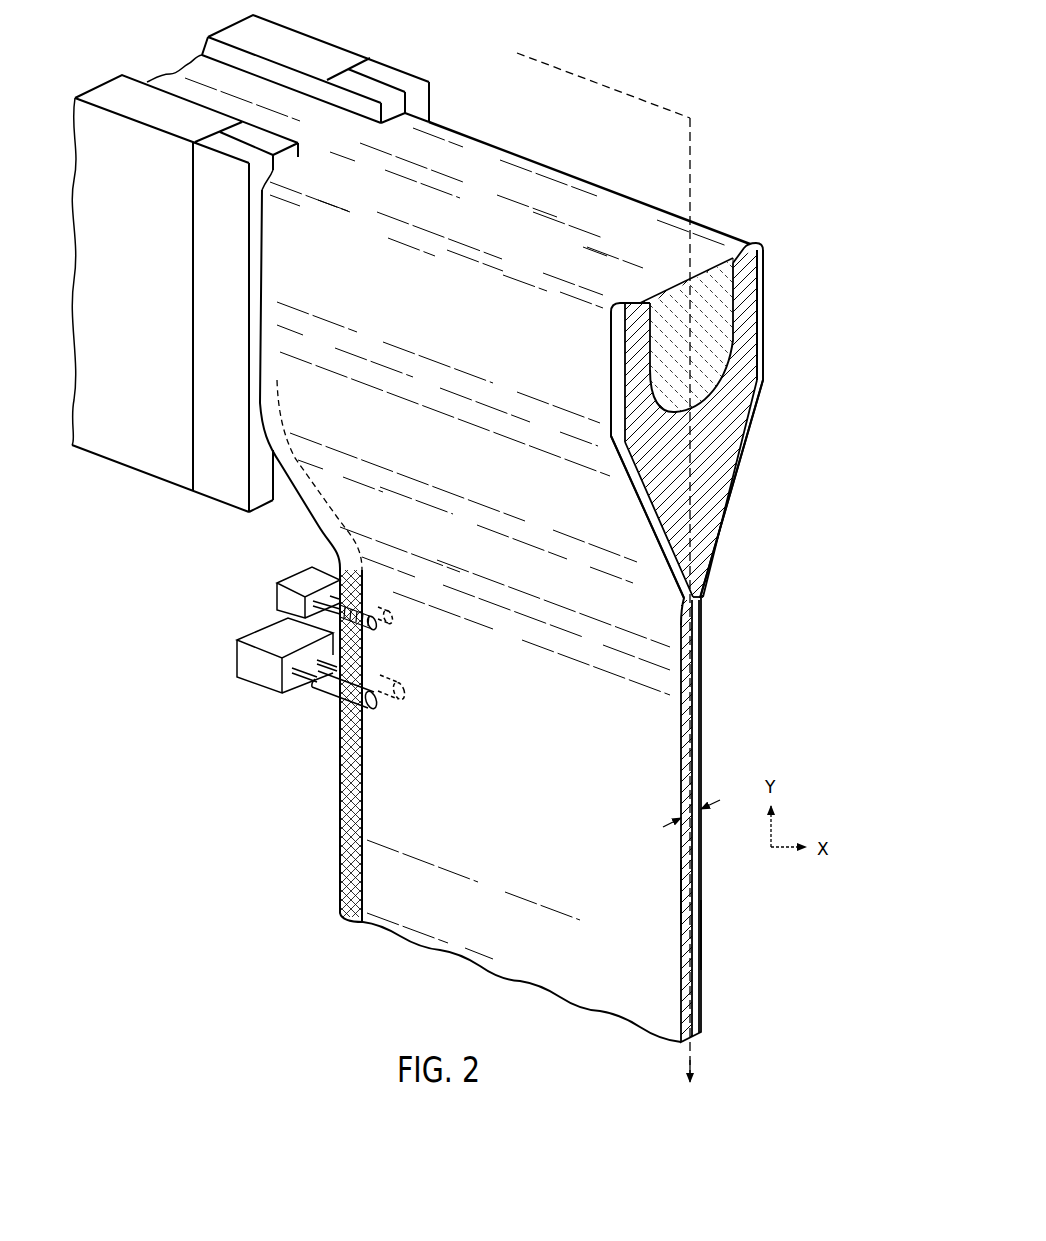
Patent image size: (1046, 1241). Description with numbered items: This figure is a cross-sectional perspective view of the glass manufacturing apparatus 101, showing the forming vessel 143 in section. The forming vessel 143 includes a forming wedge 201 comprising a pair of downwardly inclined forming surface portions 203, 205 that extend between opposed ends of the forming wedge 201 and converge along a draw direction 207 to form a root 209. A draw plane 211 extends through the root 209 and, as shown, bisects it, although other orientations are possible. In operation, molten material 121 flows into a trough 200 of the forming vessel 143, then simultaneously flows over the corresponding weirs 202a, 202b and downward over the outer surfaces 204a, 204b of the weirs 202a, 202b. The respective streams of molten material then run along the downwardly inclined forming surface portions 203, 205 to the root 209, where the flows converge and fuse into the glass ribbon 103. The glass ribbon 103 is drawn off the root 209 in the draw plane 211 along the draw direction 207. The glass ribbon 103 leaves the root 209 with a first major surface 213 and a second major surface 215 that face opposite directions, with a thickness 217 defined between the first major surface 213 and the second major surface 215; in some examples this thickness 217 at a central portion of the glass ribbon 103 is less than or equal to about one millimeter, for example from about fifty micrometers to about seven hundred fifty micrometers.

The glass manufacturing apparatus 101 is at (636, 68).
The forming vessel 143 is at (707, 272).
The draw plane 211 is at (691, 140).
The weir 202a is at (642, 302).
The weir 202b is at (753, 245).
The outer surface 204a is at (599, 468).
The outer surface 204b is at (769, 413).
The molten material 121 is at (723, 310).
The trough 200 is at (724, 340).
The forming wedge 201 is at (725, 428).
The downwardly inclined forming surface portion 203 is at (644, 529).
The downwardly inclined forming surface portion 205 is at (755, 489).
The root 209 is at (698, 600).
The glass ribbon 103 is at (668, 713).
The thickness 217 is at (707, 792).
The first major surface 213 is at (636, 893).
The second major surface 215 is at (750, 935).
The draw direction 207 is at (693, 1068).